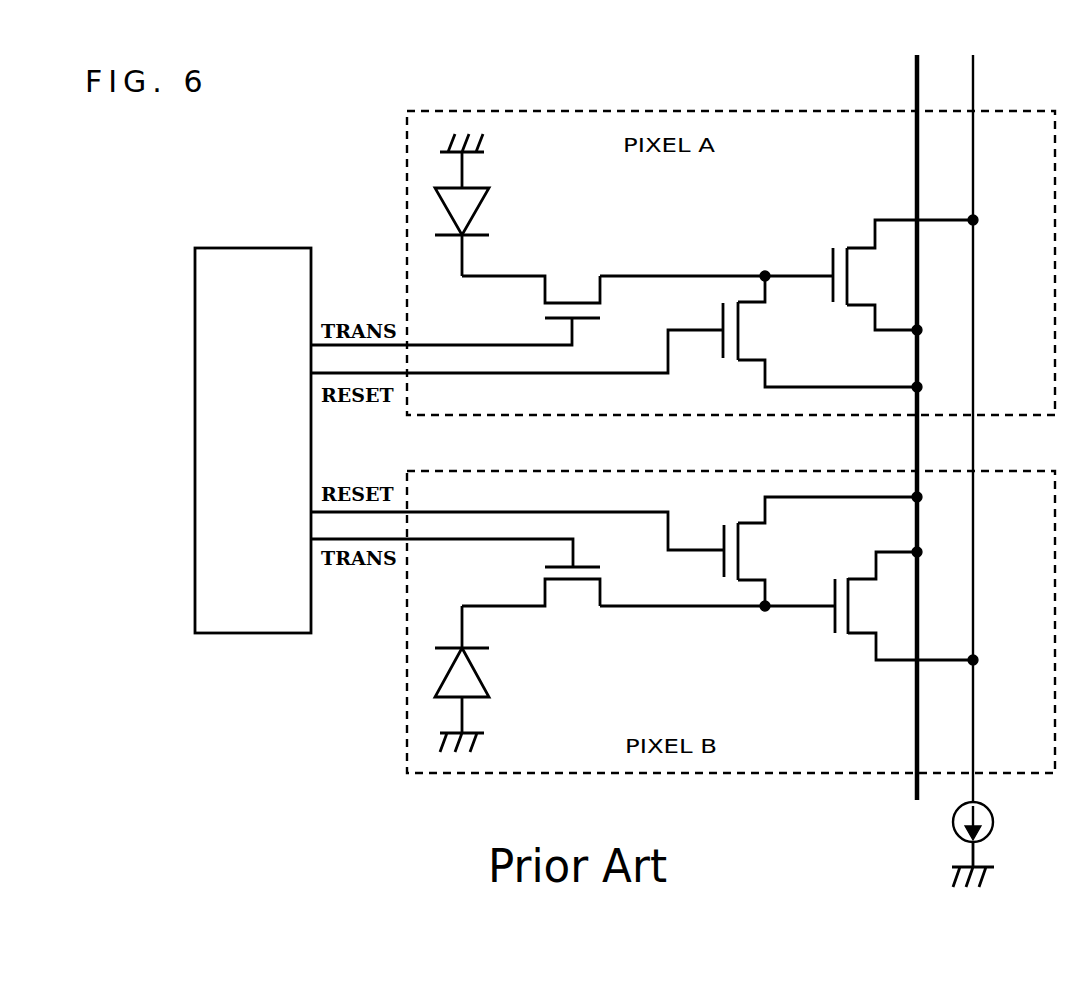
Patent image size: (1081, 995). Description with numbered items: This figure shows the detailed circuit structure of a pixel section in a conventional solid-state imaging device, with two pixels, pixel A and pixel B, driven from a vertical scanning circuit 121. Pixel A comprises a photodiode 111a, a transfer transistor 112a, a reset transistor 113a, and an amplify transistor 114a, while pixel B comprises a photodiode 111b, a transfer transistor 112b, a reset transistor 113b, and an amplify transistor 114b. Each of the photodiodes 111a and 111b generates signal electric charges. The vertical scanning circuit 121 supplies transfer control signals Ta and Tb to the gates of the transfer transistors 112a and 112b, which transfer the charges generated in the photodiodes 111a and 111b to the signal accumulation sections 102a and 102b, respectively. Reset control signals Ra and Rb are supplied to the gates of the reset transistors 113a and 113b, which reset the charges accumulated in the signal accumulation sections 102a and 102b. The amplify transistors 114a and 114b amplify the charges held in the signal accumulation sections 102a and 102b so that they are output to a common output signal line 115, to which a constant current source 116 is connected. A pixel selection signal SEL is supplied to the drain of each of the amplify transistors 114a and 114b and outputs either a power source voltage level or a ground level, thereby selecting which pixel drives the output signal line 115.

The vertical scanning circuit 121 is at (238, 249).
The photodiode 111a is at (476, 206).
The transfer transistor 112a is at (565, 272).
The signal accumulation section 102a is at (672, 272).
The reset transistor 113a is at (765, 345).
The amplify transistor 114a is at (822, 257).
The photodiode 111b is at (478, 672).
The transfer transistor 112b is at (565, 603).
The signal accumulation section 102b is at (672, 609).
The reset transistor 113b is at (762, 562).
The amplify transistor 114b is at (822, 626).
The output signal line 115 is at (973, 85).
The constant current source 116 is at (953, 822).
The pixel selection signal SEL is at (917, 85).
The transfer control signal Ta is at (440, 345).
The reset control signal Ra is at (440, 373).
The reset control signal Rb is at (440, 512).
The transfer control signal Tb is at (440, 539).